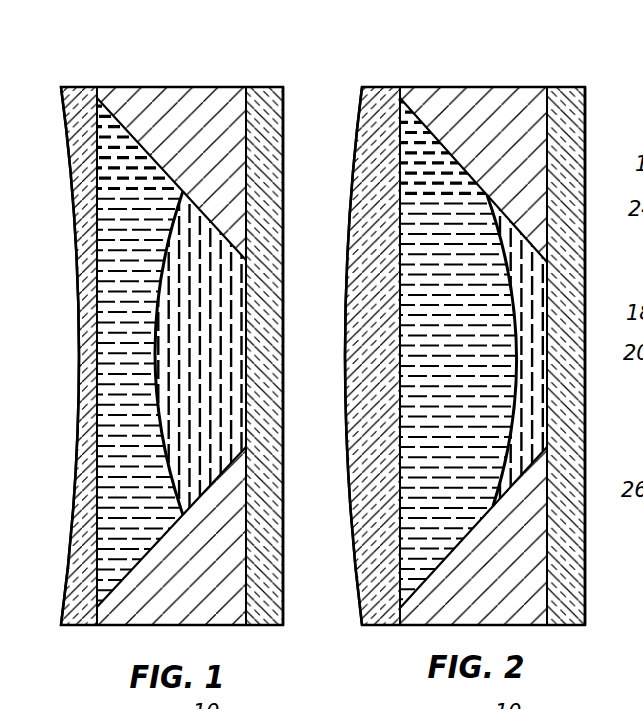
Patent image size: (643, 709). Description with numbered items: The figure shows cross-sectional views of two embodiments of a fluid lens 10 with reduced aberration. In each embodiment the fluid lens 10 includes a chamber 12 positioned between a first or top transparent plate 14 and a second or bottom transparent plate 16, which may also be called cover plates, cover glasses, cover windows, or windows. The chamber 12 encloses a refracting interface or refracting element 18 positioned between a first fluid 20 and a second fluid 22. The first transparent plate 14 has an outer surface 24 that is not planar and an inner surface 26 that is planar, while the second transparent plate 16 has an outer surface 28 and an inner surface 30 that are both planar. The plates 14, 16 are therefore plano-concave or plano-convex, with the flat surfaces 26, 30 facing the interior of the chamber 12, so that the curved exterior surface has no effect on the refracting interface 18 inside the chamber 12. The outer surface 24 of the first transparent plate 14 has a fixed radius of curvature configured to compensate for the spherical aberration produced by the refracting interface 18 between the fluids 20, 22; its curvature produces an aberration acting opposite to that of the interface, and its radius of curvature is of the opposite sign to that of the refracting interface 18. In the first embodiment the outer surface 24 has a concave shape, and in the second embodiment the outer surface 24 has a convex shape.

In FIG. 1, the fluid lens 10 is at (229, 85).
In FIG. 2, the fluid lens 10 is at (533, 84).
In FIG. 1, the chamber 12 is at (127, 184).
In FIG. 2, the chamber 12 is at (428, 184).
In FIG. 1, the first transparent plate 14 is at (74, 146).
In FIG. 2, the first transparent plate 14 is at (363, 164).
In FIG. 1, the second transparent plate 16 is at (264, 167).
In FIG. 2, the second transparent plate 16 is at (565, 167).
In FIG. 1, the refracting interface 18 is at (156, 316).
In FIG. 2, the refracting interface 18 is at (517, 327).
In FIG. 1, the first fluid 20 is at (113, 341).
In FIG. 2, the first fluid 20 is at (415, 353).
In FIG. 1, the second fluid 22 is at (215, 305).
In FIG. 2, the second fluid 22 is at (538, 315).
In FIG. 1, the outer surface 24 is at (76, 213).
In FIG. 2, the outer surface 24 is at (355, 203).
In FIG. 1, the inner surface 26 is at (97, 503).
In FIG. 2, the inner surface 26 is at (398, 513).
In FIG. 1, the outer surface 28 is at (284, 257).
In FIG. 2, the outer surface 28 is at (586, 260).
In FIG. 1, the inner surface 30 is at (247, 427).
In FIG. 2, the inner surface 30 is at (549, 437).